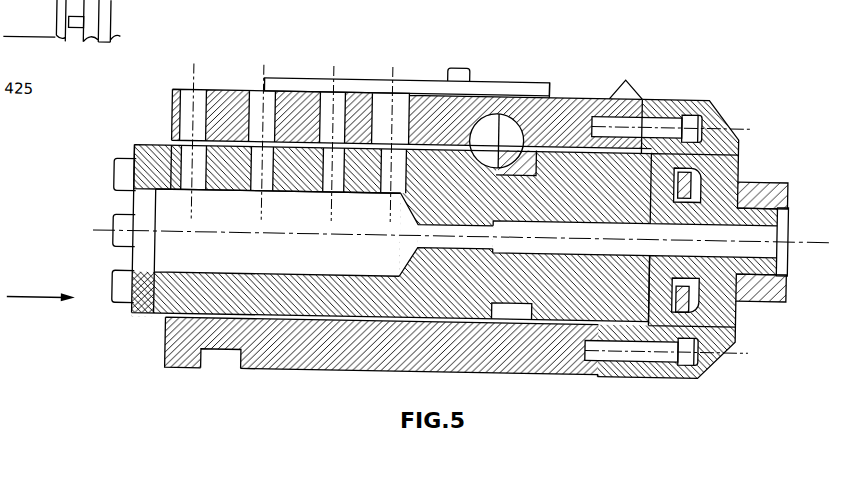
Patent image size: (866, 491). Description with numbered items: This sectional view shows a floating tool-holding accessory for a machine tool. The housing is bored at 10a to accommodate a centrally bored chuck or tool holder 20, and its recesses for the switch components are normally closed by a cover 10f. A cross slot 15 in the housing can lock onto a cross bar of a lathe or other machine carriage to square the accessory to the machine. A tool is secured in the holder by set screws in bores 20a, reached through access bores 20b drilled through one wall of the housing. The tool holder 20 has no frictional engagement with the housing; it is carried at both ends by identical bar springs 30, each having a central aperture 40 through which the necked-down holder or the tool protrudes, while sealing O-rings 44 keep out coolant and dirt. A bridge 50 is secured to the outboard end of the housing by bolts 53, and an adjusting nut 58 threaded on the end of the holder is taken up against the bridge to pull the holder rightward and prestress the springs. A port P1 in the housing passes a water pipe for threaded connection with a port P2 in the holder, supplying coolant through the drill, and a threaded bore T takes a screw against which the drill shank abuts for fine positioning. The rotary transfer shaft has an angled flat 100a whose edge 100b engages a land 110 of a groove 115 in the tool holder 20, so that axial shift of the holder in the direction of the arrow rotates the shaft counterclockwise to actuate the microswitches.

The housing bore 10a is at (168, 339).
The cover 10f is at (283, 79).
The cross slot 15 is at (243, 352).
The tool holder 20 is at (157, 307).
The set screw bores 20a is at (193, 178).
The access bores 20b is at (200, 88).
The bar springs 30 is at (147, 144).
The central aperture 40 is at (140, 249).
The sealing O-rings 44 is at (628, 369).
The bridge 50 is at (730, 309).
The bolts 53 is at (690, 115).
The adjusting nut 58 is at (750, 168).
The flat area 100a is at (519, 101).
The edge 100b is at (493, 146).
The land 110 is at (511, 312).
The groove 115 is at (553, 132).
The housing port P1 is at (392, 98).
The holder port P2 is at (380, 188).
The threaded bore T is at (423, 234).